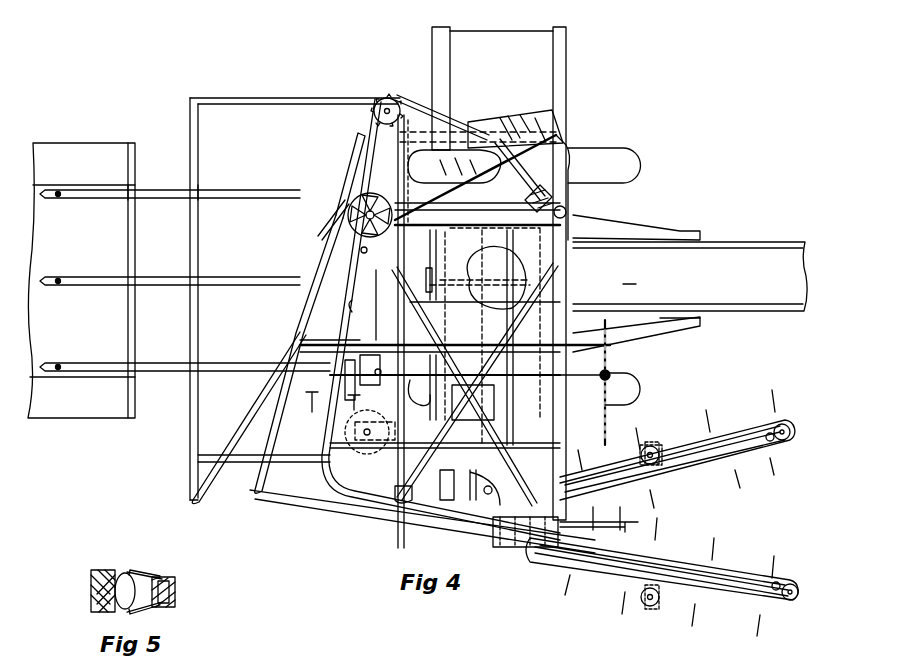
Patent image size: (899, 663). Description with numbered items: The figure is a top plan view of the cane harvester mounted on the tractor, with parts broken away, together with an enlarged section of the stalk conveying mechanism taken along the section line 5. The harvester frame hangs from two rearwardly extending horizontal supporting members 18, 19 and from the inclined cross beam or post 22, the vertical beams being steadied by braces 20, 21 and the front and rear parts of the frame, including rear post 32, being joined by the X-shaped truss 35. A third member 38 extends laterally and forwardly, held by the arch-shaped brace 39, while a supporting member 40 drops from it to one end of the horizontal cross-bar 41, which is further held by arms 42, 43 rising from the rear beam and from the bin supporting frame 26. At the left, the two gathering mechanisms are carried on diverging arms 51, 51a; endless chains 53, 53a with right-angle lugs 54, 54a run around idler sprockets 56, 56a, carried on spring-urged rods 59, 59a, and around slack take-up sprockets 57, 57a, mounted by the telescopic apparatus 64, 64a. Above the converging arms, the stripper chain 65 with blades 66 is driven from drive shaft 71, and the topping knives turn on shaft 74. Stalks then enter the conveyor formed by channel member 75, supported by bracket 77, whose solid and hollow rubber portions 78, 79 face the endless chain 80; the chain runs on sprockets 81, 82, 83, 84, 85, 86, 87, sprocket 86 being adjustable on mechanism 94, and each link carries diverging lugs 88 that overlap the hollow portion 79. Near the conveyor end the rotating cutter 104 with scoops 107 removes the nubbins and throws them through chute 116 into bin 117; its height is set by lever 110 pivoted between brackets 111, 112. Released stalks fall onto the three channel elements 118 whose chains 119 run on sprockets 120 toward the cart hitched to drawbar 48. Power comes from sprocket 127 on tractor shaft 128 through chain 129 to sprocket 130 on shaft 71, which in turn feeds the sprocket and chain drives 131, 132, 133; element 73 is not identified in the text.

In FIG. 4, the section line 5 is at (332, 409).
In FIG. 4, the horizontal supporting member 18 is at (430, 366).
In FIG. 4, the horizontal supporting member 19 is at (470, 214).
In FIG. 4, the brace 20 is at (640, 324).
In FIG. 4, the brace 21 is at (632, 224).
In FIG. 4, the cross beam or post 22 is at (578, 260).
In FIG. 4, the bin supporting frame 26 is at (432, 51).
In FIG. 4, the post 32 is at (394, 430).
In FIG. 4, the X-shaped truss 35 is at (500, 412).
In FIG. 4, the third member 38 is at (268, 437).
In FIG. 4, the brace 39 is at (290, 346).
In FIG. 4, the supporting member 40 is at (246, 404).
In FIG. 4, the cross-bar 41 is at (192, 414).
In FIG. 4, the arm 42 is at (255, 462).
In FIG. 4, the arm 43 is at (246, 100).
In FIG. 4, the drawbar 48 is at (446, 240).
In FIG. 4, the arm or post 51 is at (680, 572).
In FIG. 4, the arm or post 51a is at (668, 490).
In FIG. 4, the endless chain 53 is at (728, 562).
In FIG. 4, the endless chain 53a is at (762, 470).
In FIG. 4, the projections or lugs 54 is at (708, 543).
In FIG. 4, the projections or lugs 54a is at (704, 480).
In FIG. 4, the idler sprocket 56 is at (784, 600).
In FIG. 4, the idler sprocket 56a is at (788, 440).
In FIG. 4, the idler sprocket 57 is at (650, 606).
In FIG. 4, the idler sprocket 57a is at (662, 440).
In FIG. 4, the rod 59 is at (780, 554).
In FIG. 4, the rod 59a is at (766, 456).
In FIG. 4, the apparatus 64 is at (656, 586).
In FIG. 4, the apparatus 64a is at (640, 457).
In FIG. 4, the endless chain or belt 65 is at (638, 395).
In FIG. 4, the rigid elements or blades 66 is at (604, 348).
In FIG. 4, the drive shaft 71 is at (512, 384).
In FIG. 4, the shaft 73 is at (632, 518).
In FIG. 4, the shaft 74 is at (608, 516).
In FIG. 4, the channel member 75 is at (352, 514).
In FIG. 5, the channel member 75 is at (104, 570).
In FIG. 4, the bracket 77 is at (344, 182).
In FIG. 5, the solid portion 78 is at (92, 588).
In FIG. 5, the hollow portion 79 is at (98, 603).
In FIG. 4, the endless chain 80 is at (354, 297).
In FIG. 5, the endless chain 80 is at (178, 586).
In FIG. 4, the sprocket 81 is at (326, 220).
In FIG. 4, the sprocket 82 is at (338, 483).
In FIG. 4, the sprocket 83 is at (344, 337).
In FIG. 4, the sprocket 84 is at (352, 250).
In FIG. 4, the sprocket 85 is at (386, 96).
In FIG. 4, the sprocket 86 is at (585, 168).
In FIG. 4, the sprocket 87 is at (607, 362).
In FIG. 5, the lugs 88 is at (142, 574).
In FIG. 4, the mechanism 94 is at (575, 201).
In FIG. 4, the rotating cutter 104 is at (370, 194).
In FIG. 4, the curved radially extending arms or scoops 107 is at (454, 177).
In FIG. 4, the lever 110 is at (372, 307).
In FIG. 4, the support or bracket 111 is at (342, 380).
In FIG. 4, the support or bracket 112 is at (374, 384).
In FIG. 4, the chute 116 is at (562, 126).
In FIG. 4, the bin 117 is at (562, 78).
In FIG. 4, the supporting elements 118 is at (150, 200).
In FIG. 4, the conveyor chains 119 is at (222, 200).
In FIG. 4, the sprockets 120 is at (50, 200).
In FIG. 4, the sprocket 127 is at (478, 276).
In FIG. 4, the shaft 128 is at (480, 300).
In FIG. 4, the chain 129 is at (440, 322).
In FIG. 4, the sprocket 130 is at (429, 402).
In FIG. 4, the sprocket and chain drive 131 is at (447, 487).
In FIG. 4, the sprocket and chain drive 132 is at (521, 507).
In FIG. 4, the sprocket and chain drive 133 is at (505, 447).